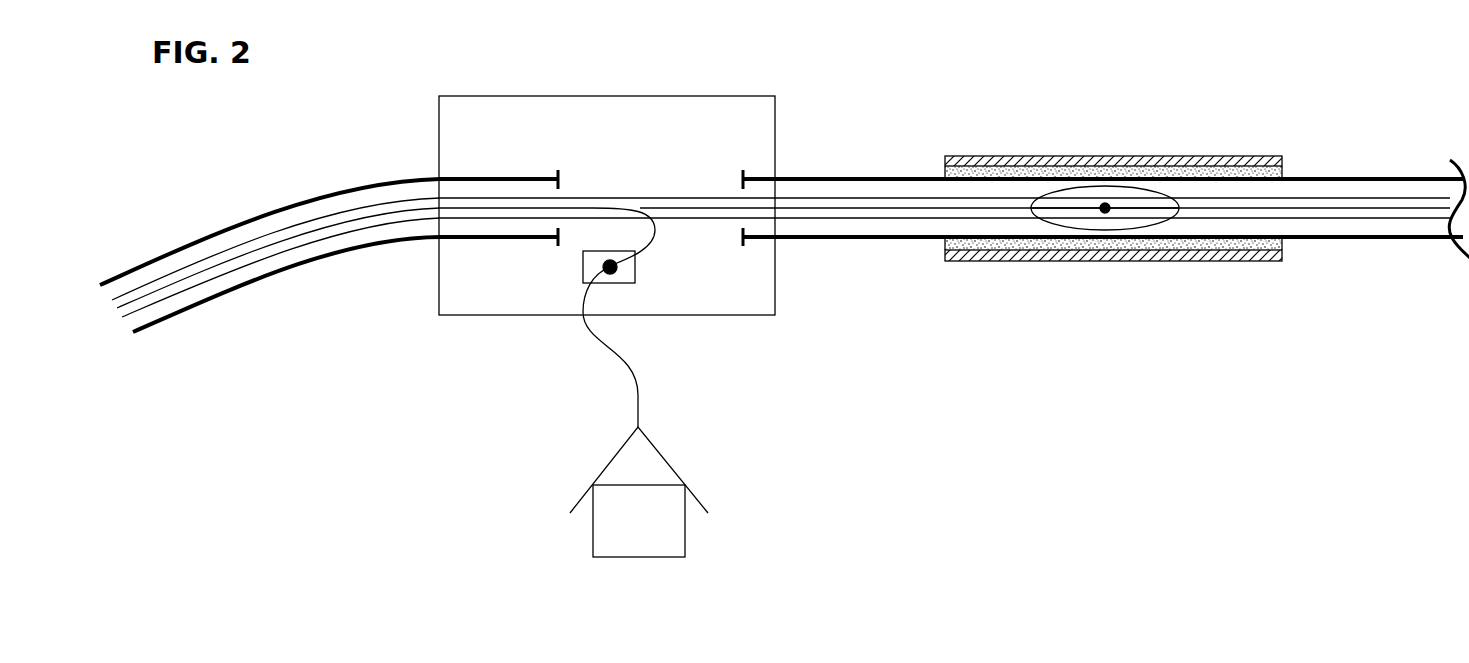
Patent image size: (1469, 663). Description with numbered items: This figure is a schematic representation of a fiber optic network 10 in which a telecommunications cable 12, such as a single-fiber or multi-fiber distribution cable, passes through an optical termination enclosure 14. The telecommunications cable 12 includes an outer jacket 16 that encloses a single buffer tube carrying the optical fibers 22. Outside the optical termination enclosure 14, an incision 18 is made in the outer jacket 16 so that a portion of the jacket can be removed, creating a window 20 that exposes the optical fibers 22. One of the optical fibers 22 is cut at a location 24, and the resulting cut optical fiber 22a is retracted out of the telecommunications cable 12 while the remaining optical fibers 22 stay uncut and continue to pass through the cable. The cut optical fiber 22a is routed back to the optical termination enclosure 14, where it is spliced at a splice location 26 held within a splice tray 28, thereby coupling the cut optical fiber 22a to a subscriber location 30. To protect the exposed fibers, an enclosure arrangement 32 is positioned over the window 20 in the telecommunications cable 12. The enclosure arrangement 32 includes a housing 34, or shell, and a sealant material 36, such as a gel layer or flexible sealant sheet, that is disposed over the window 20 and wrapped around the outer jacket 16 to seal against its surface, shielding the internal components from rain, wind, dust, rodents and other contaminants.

The fiber optic network 10 is at (1257, 102).
The telecommunications cable 12 is at (305, 256).
The optical termination enclosure 14 is at (697, 93).
The outer jacket 16 is at (1368, 178).
The incision 18 is at (1150, 225).
The window 20 is at (1080, 190).
The optical fibers 22 is at (400, 196).
The cut optical fiber 22a is at (652, 240).
The location 24 is at (1103, 212).
The splice location 26 is at (604, 271).
The splice tray 28 is at (622, 283).
The subscriber location 30 is at (677, 467).
The enclosure arrangement 32 is at (992, 268).
The housing 34 is at (983, 156).
The sealant material 36 is at (1283, 170).